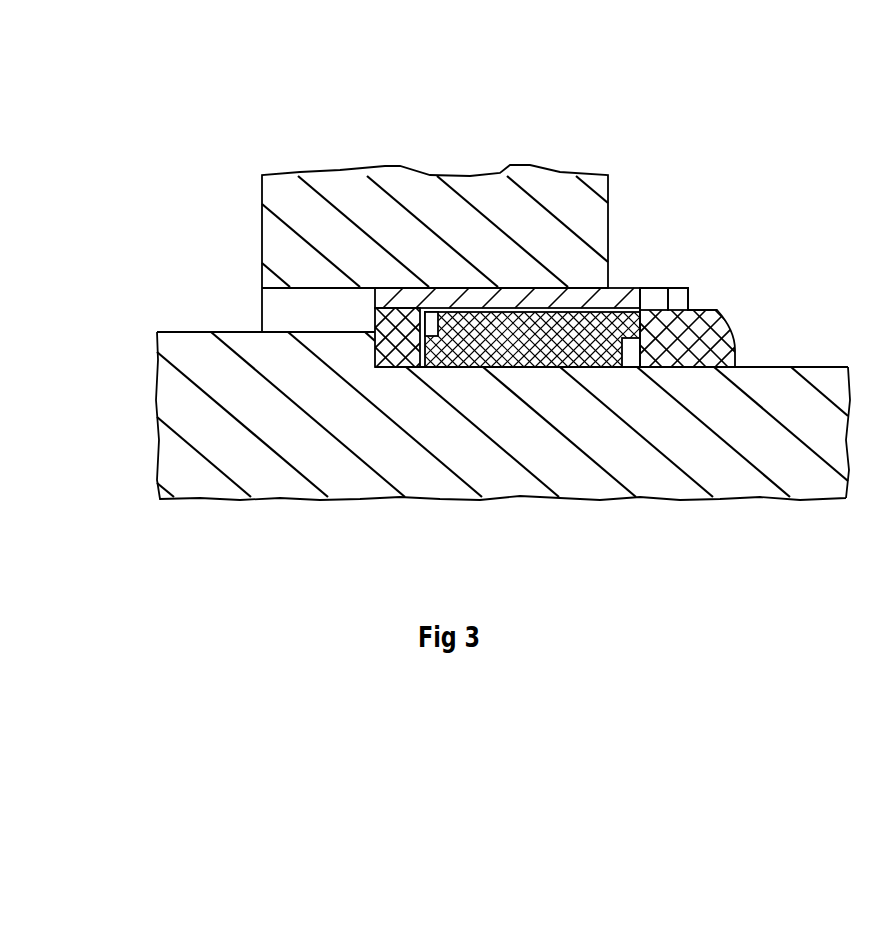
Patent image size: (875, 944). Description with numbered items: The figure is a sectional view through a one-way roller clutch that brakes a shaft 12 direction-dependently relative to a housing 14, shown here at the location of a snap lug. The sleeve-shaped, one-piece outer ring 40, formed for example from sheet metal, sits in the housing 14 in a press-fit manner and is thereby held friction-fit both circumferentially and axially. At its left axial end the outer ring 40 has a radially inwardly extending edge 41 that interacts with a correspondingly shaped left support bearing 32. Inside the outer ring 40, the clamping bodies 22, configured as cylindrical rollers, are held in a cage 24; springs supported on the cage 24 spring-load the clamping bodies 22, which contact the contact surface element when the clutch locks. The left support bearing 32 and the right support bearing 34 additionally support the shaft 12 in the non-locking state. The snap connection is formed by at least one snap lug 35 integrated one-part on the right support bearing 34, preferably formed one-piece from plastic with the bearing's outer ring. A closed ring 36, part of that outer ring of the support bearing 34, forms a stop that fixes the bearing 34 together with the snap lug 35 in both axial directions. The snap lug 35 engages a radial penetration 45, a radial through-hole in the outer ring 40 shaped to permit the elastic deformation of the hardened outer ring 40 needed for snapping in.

The shaft 12 is at (267, 410).
The housing 14 is at (330, 213).
The clamping bodies 22 is at (518, 367).
The cage 24 is at (597, 368).
The left support bearing 32 is at (397, 360).
The right support bearing 34 is at (708, 342).
The snap lug 35 is at (667, 288).
The ring 36 is at (695, 288).
The outer ring 40 is at (458, 287).
The radially inwardly extending edge 41 is at (380, 307).
The radial penetration 45 is at (650, 288).